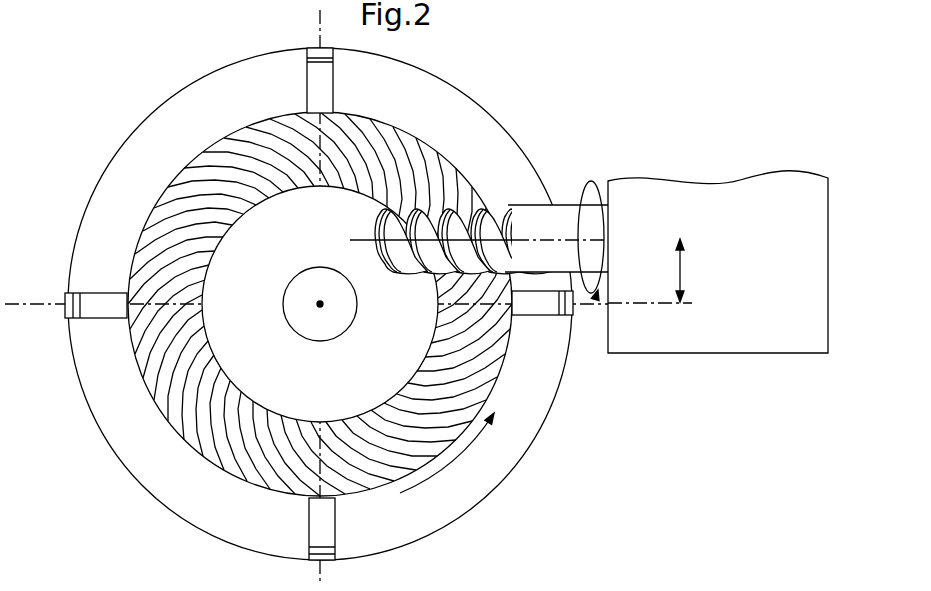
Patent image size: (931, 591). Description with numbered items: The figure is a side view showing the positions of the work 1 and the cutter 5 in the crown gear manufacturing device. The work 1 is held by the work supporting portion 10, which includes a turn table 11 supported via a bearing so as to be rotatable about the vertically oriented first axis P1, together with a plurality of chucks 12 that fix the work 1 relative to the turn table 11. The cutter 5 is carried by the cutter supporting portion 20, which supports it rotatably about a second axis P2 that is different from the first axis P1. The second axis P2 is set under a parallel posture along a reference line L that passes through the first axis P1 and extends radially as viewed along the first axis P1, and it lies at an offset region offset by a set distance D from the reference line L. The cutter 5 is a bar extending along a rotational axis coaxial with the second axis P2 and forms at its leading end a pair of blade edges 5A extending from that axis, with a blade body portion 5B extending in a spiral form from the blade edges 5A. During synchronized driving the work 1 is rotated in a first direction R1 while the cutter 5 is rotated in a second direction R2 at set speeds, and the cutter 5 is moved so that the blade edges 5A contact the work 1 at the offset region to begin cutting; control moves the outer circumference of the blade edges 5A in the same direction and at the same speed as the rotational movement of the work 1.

The work 1 is at (180, 425).
The cutter 5 is at (521, 222).
The blade edges 5A is at (383, 264).
The blade body portion 5B is at (483, 206).
The work supporting portion 10 is at (335, 304).
The turn table 11 is at (545, 407).
The chucks 12 is at (307, 78).
The cutter supporting portion 20 is at (733, 354).
The first axis P1 is at (316, 307).
The second axis P2 is at (553, 222).
The first direction R1 is at (445, 467).
The second direction R2 is at (590, 186).
The set distance D is at (691, 270).
The reference line L is at (632, 304).